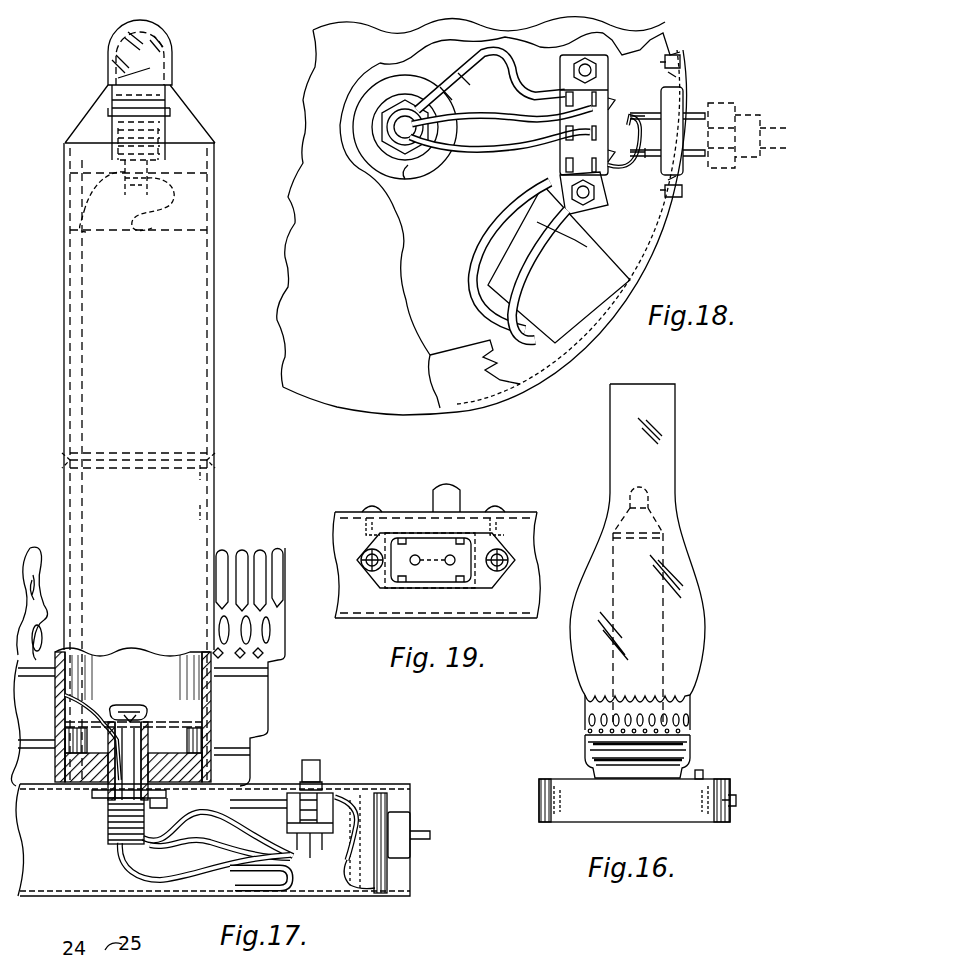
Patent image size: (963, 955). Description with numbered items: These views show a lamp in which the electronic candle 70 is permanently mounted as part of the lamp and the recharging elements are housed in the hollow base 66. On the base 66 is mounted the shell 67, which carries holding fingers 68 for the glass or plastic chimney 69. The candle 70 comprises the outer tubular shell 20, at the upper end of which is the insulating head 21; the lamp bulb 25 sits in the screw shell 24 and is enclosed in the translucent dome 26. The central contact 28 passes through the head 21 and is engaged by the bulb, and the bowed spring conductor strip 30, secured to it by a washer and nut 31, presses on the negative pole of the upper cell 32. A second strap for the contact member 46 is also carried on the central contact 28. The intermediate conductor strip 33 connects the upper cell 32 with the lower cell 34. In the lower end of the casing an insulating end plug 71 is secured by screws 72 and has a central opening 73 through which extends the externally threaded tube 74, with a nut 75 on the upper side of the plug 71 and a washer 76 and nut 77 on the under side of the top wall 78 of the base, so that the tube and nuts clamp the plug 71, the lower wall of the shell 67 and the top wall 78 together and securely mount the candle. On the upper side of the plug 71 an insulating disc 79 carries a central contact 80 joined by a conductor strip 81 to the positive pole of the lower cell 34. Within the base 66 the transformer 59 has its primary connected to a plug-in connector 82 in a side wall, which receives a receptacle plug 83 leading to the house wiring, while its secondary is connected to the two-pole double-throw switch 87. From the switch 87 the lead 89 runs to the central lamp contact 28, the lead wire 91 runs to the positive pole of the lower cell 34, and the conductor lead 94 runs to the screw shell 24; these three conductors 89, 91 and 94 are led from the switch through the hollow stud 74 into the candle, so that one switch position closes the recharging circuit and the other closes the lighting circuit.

In FIG. 17, the outer tubular shell 20 is at (212, 472).
In FIG. 17, the insulating head 21 is at (188, 126).
In FIG. 17, the screw shell 24 is at (118, 126).
In FIG. 17, the lamp bulb 25 is at (150, 76).
In FIG. 17, the translucent dome 26 is at (108, 63).
In FIG. 16, the translucent dome 26 is at (635, 490).
In FIG. 17, the central contact 28 is at (155, 160).
In FIG. 17, the spring conductor strip 30 is at (170, 204).
In FIG. 17, the washer and nut 31 is at (96, 196).
In FIG. 17, the upper sealed electric cell 32 is at (195, 290).
In FIG. 17, the conductor strip 33 is at (137, 453).
In FIG. 17, the lower sealed cell 34 is at (197, 516).
In FIG. 17, the contact member strap 46 is at (90, 222).
In FIG. 17, the transformer 59 is at (336, 893).
In FIG. 18, the transformer 59 is at (600, 268).
In FIG. 17, the hollow base 66 is at (213, 840).
In FIG. 18, the hollow base 66 is at (452, 412).
In FIG. 19, the hollow base 66 is at (518, 620).
In FIG. 16, the hollow base 66 is at (570, 820).
In FIG. 17, the shell 67 is at (270, 696).
In FIG. 16, the shell 67 is at (688, 749).
In FIG. 17, the holding fingers 68 is at (272, 585).
In FIG. 16, the holding fingers 68 is at (693, 707).
In FIG. 16, the chimney 69 is at (690, 580).
In FIG. 17, the electronic candle 70 is at (215, 428).
In FIG. 16, the electronic candle 70 is at (663, 630).
In FIG. 17, the insulating end plug 71 is at (206, 751).
In FIG. 17, the screws 72 is at (218, 773).
In FIG. 17, the central opening 73 is at (150, 756).
In FIG. 17, the threaded tube 74 is at (108, 830).
In FIG. 18, the threaded tube 74 is at (395, 138).
In FIG. 17, the nut 75 is at (158, 727).
In FIG. 17, the washer 76 is at (160, 808).
In FIG. 17, the nut 77 is at (105, 798).
In FIG. 18, the nut 77 is at (406, 180).
In FIG. 17, the top wall 78 is at (275, 791).
In FIG. 17, the insulating disc 79 is at (160, 714).
In FIG. 17, the central contact 80 is at (127, 710).
In FIG. 17, the conductor strip 81 is at (97, 705).
In FIG. 17, the plug-in connector 82 is at (408, 830).
In FIG. 18, the plug-in connector 82 is at (672, 108).
In FIG. 19, the plug-in connector 82 is at (445, 584).
In FIG. 16, the plug-in connector 82 is at (737, 798).
In FIG. 18, the receptacle plug 83 is at (722, 170).
In FIG. 17, the two-pole double-throw switch 87 is at (324, 782).
In FIG. 18, the two-pole double-throw switch 87 is at (608, 100).
In FIG. 19, the two-pole double-throw switch 87 is at (466, 496).
In FIG. 16, the two-pole double-throw switch 87 is at (705, 774).
In FIG. 17, the lead wire 89 is at (86, 366).
In FIG. 18, the lead wire 89 is at (475, 112).
In FIG. 17, the lead wire 91 is at (110, 740).
In FIG. 18, the lead wire 91 is at (482, 145).
In FIG. 17, the conductor lead 94 is at (66, 343).
In FIG. 18, the conductor lead 94 is at (515, 92).